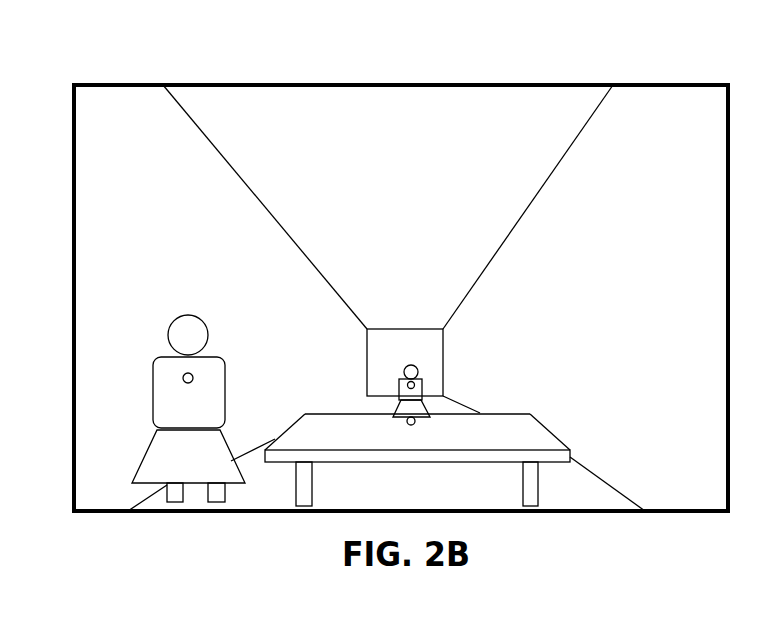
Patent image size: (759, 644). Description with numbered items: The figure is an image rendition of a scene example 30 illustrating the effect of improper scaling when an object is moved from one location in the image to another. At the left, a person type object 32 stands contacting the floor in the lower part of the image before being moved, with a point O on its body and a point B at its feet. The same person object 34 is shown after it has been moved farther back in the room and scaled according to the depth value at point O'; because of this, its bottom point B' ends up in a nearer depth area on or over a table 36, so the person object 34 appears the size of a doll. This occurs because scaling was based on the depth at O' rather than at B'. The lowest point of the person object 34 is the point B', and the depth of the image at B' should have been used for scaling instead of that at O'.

The scene example 30 is at (124, 53).
The person type object 32 is at (188, 439).
The person object 34 is at (406, 360).
The table 36 is at (430, 428).
The point O is at (221, 360).
The point B is at (177, 523).
The point O' is at (448, 373).
The point B' is at (370, 398).